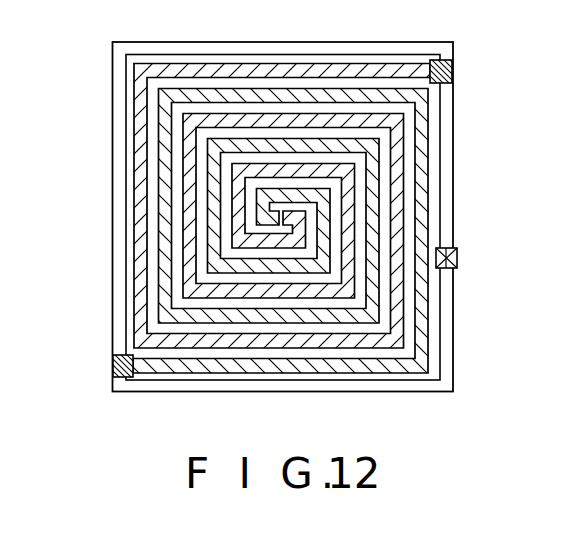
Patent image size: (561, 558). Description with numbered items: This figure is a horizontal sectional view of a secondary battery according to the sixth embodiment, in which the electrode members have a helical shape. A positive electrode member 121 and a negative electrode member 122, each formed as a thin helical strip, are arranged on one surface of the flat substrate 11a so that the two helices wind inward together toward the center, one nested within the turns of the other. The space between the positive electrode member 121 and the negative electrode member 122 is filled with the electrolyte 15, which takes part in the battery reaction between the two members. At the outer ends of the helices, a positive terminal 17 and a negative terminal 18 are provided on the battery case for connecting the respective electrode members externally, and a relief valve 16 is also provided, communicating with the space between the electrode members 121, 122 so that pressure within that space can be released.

The flat substrate 11a is at (113, 135).
The electrolyte 15 is at (318, 217).
The relief valve 16 is at (457, 251).
The positive terminal 17 is at (452, 68).
The negative terminal 18 is at (113, 367).
The positive electrode member 121 is at (370, 73).
The negative electrode member 122 is at (378, 371).